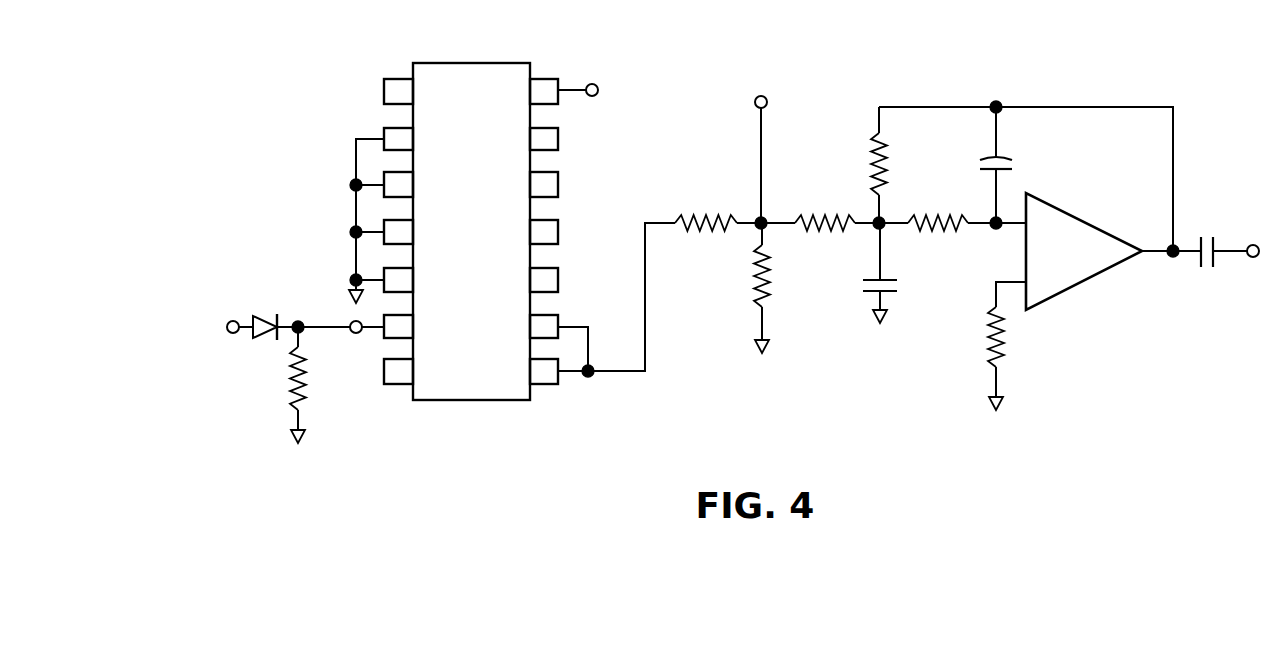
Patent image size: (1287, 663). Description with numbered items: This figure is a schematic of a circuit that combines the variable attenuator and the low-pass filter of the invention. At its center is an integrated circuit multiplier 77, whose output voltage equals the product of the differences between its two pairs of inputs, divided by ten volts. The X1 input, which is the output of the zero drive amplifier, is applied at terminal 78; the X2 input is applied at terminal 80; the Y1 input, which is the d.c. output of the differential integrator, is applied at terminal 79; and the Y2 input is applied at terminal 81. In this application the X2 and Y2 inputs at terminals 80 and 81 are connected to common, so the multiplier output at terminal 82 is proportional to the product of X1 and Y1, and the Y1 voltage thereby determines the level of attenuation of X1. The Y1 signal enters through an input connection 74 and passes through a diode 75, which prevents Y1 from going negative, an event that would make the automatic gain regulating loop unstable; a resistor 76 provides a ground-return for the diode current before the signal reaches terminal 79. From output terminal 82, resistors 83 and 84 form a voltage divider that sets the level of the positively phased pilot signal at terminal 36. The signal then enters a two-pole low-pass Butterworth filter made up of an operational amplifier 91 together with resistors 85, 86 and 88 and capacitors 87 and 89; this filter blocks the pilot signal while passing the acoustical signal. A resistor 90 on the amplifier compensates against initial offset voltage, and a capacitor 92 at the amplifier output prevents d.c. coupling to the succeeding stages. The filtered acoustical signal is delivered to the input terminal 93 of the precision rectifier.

The terminal 36 is at (764, 96).
The input terminal 74 is at (231, 321).
The diode 75 is at (262, 316).
The resistor 76 is at (296, 380).
The integrated circuit multiplier 77 is at (468, 63).
The terminal 78 is at (597, 85).
The terminal 79 is at (358, 334).
The terminal 80 is at (360, 139).
The terminal 81 is at (352, 280).
The terminal 82 is at (590, 377).
The resistor 83 is at (705, 219).
The resistor 84 is at (758, 272).
The resistor 85 is at (828, 219).
The resistor 86 is at (886, 165).
The capacitor 87 is at (884, 295).
The resistor 88 is at (939, 232).
The capacitor 89 is at (1002, 156).
The resistor 90 is at (1002, 338).
The operational amplifier 91 is at (1029, 208).
The capacitor 92 is at (1216, 260).
The input terminal 93 is at (1257, 246).